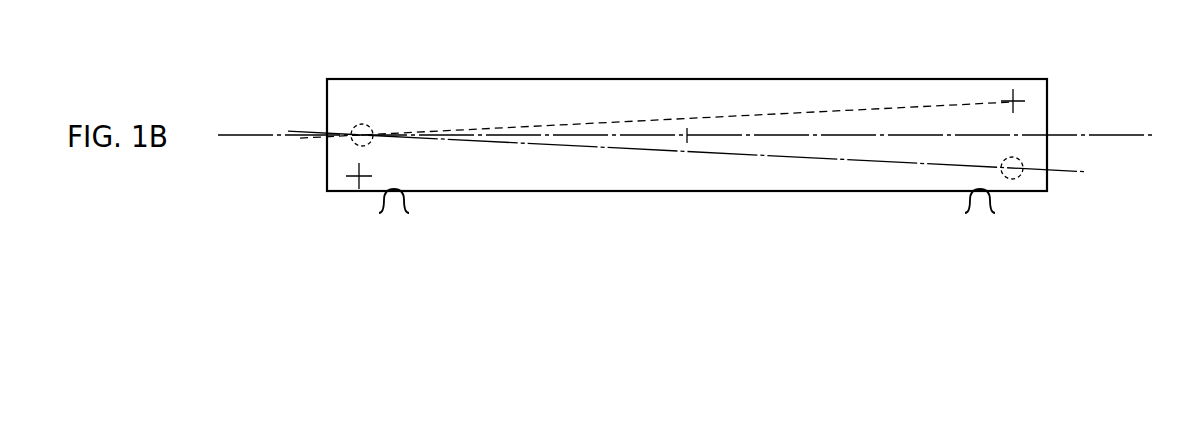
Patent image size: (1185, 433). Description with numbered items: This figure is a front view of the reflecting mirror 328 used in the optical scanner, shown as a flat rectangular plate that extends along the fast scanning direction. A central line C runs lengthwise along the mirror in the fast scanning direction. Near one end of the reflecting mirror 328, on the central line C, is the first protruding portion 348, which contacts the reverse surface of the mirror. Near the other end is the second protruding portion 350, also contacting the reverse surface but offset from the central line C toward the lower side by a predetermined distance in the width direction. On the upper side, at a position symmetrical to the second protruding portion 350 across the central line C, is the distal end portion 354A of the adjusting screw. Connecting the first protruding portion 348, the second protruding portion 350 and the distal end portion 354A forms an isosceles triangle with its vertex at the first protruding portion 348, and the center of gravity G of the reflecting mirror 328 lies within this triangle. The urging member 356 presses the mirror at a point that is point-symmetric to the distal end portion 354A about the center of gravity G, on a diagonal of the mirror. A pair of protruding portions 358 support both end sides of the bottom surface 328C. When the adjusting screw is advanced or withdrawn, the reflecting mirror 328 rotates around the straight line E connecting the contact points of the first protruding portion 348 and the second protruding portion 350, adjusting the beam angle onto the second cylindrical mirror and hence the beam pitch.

The reflecting mirror 328 is at (746, 71).
The bottom surface 328C is at (677, 192).
The first protruding portion 348 is at (362, 124).
The second protruding portion 350 is at (1023, 179).
The distal end portion 354A is at (1022, 99).
The urging member 356 is at (347, 180).
The protruding portions 358 is at (405, 204).
The center of gravity G is at (687, 128).
The straight line E is at (805, 160).
The central line C is at (1127, 135).